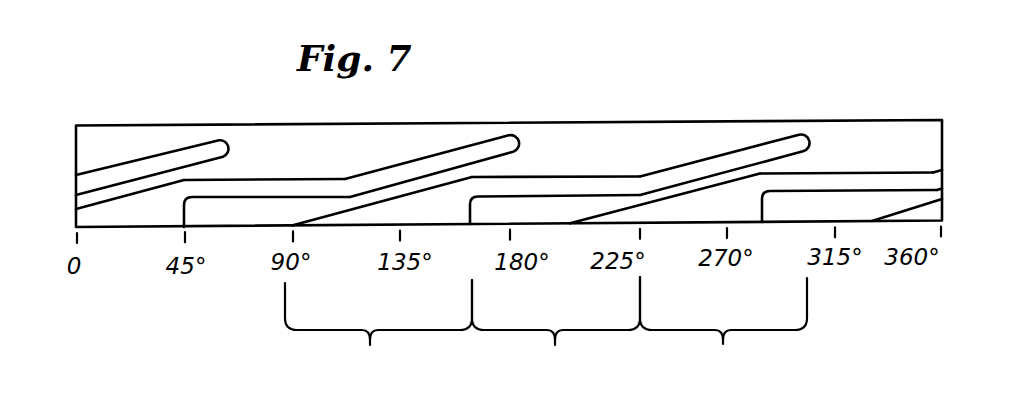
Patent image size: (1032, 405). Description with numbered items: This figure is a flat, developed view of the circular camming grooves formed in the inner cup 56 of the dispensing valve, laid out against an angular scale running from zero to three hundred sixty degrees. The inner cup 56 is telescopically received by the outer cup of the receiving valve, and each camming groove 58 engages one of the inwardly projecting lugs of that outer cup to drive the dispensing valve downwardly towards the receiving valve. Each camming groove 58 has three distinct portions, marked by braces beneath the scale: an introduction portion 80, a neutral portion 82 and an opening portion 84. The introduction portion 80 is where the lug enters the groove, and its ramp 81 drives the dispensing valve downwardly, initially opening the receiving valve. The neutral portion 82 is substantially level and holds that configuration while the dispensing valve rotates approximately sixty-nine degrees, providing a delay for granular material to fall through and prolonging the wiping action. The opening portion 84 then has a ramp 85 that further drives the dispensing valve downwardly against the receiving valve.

The inner cup 56 is at (635, 147).
The camming groove 58 is at (248, 190).
The introduction portion 80 is at (378, 331).
The ramp 81 is at (373, 205).
The neutral portion 82 is at (556, 330).
The opening portion 84 is at (723, 329).
The ramp 85 is at (707, 162).